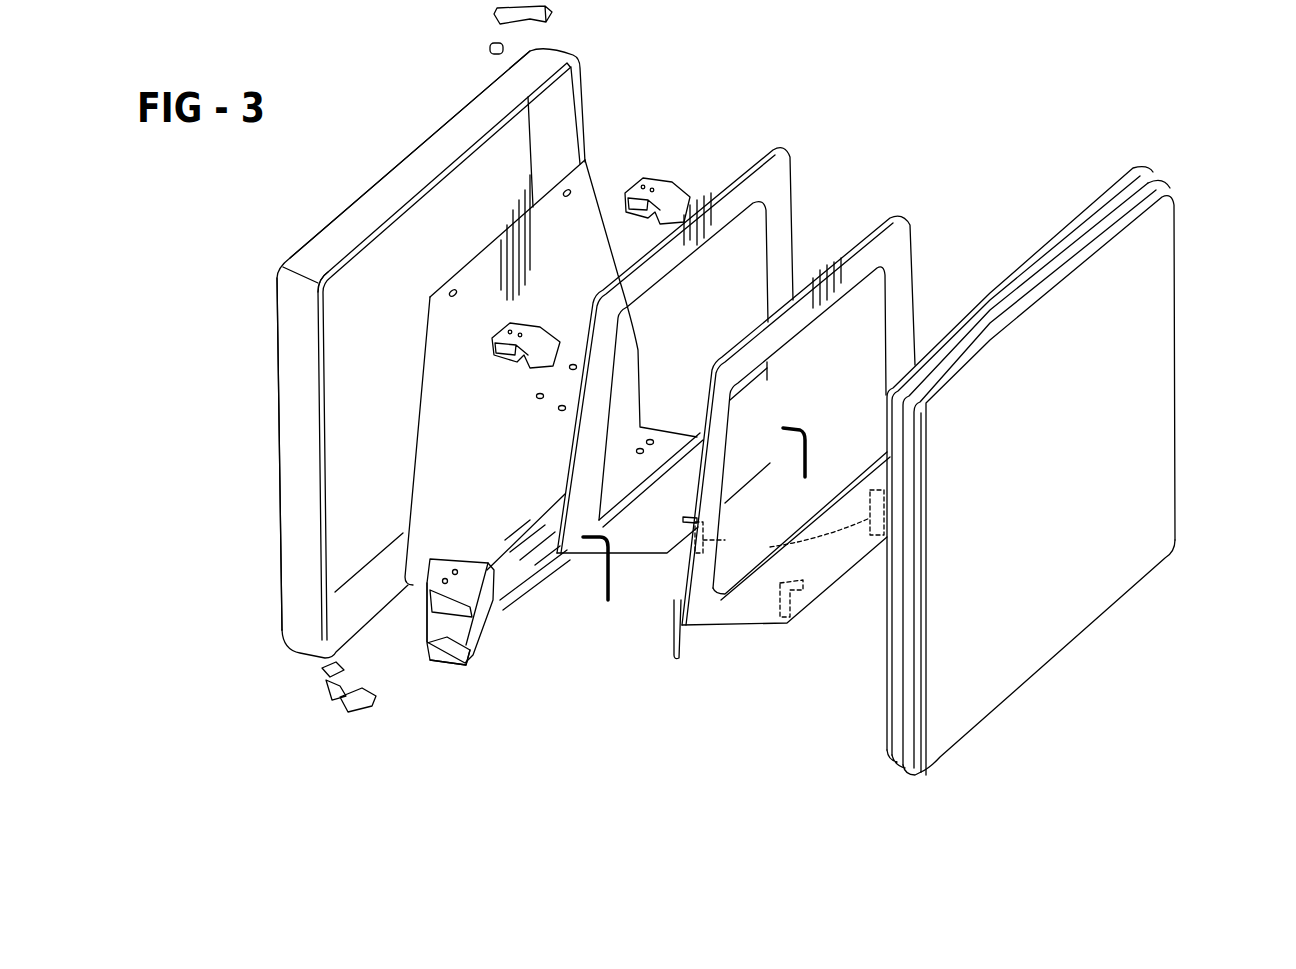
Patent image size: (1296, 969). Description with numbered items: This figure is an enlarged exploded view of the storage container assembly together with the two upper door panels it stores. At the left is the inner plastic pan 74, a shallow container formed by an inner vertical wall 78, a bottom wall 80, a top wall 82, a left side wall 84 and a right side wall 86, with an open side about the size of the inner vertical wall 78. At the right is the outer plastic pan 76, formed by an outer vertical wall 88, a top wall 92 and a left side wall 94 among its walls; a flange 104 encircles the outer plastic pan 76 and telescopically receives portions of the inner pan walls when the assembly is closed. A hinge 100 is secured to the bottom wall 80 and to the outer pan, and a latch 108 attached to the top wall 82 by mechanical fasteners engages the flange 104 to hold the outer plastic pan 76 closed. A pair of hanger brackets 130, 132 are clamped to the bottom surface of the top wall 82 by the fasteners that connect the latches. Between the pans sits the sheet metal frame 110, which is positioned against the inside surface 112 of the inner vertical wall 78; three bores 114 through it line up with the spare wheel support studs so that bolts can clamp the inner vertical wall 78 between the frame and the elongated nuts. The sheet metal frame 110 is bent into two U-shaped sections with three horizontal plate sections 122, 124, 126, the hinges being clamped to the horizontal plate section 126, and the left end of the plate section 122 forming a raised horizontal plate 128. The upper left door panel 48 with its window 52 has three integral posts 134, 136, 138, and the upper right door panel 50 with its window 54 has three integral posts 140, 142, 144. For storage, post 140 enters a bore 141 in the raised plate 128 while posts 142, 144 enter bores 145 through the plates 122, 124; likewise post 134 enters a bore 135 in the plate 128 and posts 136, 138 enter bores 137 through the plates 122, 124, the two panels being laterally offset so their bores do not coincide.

The upper left door panel 48 is at (722, 615).
The upper right door panel 50 is at (623, 540).
The window 52 is at (873, 312).
The window 54 is at (752, 232).
The inner plastic pan 74 is at (272, 312).
The outer plastic pan 76 is at (1180, 395).
The inner vertical wall 78 is at (337, 432).
The bottom wall 80 is at (338, 610).
The top wall 82 is at (430, 160).
The left side wall 84 is at (283, 368).
The right side wall 86 is at (585, 113).
The outer vertical wall 88 is at (1107, 572).
The top wall 92 is at (1115, 185).
The left side wall 94 is at (888, 708).
The hinge 100 is at (325, 700).
The flange 104 is at (890, 745).
The latch 108 is at (555, 10).
The sheet metal frame 110 is at (590, 202).
The inside surface 112 is at (338, 290).
The bores 114 is at (536, 398).
The horizontal plate section 122 is at (503, 600).
The horizontal plate section 124 is at (450, 640).
The horizontal plate section 126 is at (470, 660).
The raised horizontal plate 128 is at (440, 560).
The hanger bracket 130 is at (493, 343).
The hanger bracket 132 is at (680, 193).
The integral post 134 is at (680, 657).
The bore 135 is at (455, 570).
The integral post 136 is at (798, 615).
The bores 137 is at (651, 440).
The integral post 138 is at (793, 524).
The integral post 140 is at (608, 602).
The bore 141 is at (417, 580).
The integral post 142 is at (718, 530).
The integral post 144 is at (810, 450).
The bores 145 is at (641, 448).